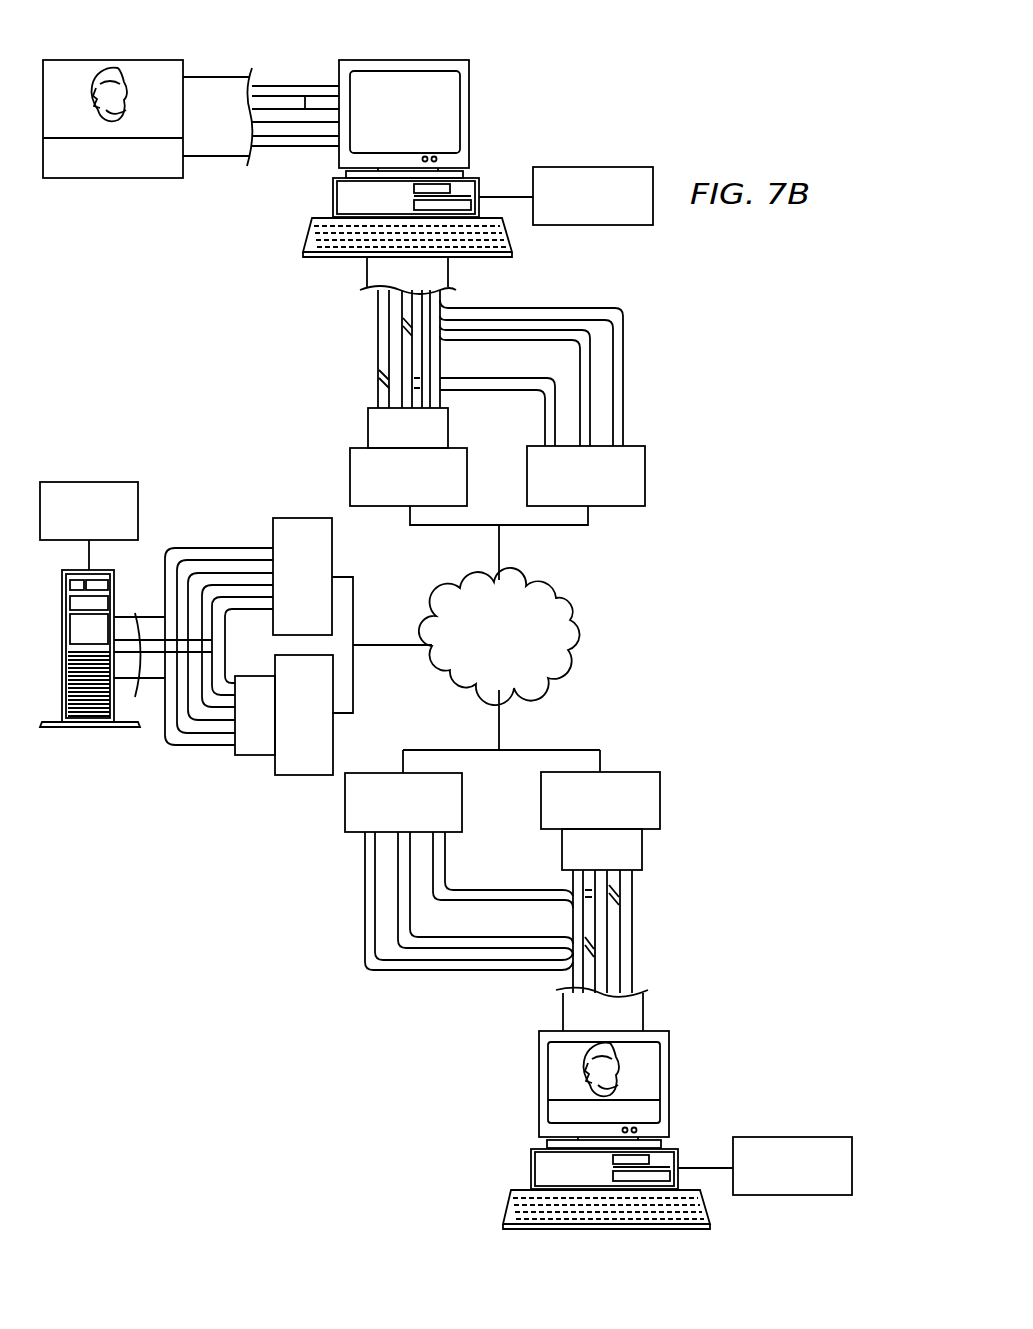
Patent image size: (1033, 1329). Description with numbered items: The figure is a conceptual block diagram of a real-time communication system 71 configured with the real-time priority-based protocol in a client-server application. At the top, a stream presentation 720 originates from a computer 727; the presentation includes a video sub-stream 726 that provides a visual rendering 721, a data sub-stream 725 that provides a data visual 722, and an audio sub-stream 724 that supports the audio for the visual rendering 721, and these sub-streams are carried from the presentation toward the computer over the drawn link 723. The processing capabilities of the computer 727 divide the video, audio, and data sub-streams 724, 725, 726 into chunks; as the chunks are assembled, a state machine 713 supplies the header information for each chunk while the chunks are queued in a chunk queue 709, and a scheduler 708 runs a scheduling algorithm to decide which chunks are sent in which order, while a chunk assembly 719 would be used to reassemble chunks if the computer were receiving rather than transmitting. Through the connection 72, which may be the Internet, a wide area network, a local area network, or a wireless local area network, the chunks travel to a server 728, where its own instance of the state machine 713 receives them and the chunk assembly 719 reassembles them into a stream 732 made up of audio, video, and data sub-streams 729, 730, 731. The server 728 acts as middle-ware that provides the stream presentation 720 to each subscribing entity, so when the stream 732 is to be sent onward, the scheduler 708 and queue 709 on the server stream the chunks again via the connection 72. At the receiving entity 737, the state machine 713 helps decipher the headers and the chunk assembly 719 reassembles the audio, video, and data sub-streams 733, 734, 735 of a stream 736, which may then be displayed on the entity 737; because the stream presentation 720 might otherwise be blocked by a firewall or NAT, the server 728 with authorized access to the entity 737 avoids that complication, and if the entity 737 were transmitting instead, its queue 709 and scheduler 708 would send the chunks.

The real-time communication system 71 is at (565, 72).
The connection 72 is at (572, 660).
The scheduler 708 is at (398, 507).
The chunk queue 709 is at (368, 430).
The state machine 713 is at (592, 166).
The chunk assembly 719 is at (646, 470).
The stream presentation 720 is at (113, 115).
The visual rendering 721 is at (143, 58).
The data visual 722 is at (113, 178).
The media stream connection 723 is at (213, 157).
The audio sub-stream 724 is at (275, 147).
The data sub-stream 725 is at (310, 96).
The video sub-stream 726 is at (275, 86).
The computer 727 is at (426, 58).
The server 728 is at (88, 728).
The sub-stream 729 is at (262, 608).
The sub-stream 730 is at (252, 573).
The sub-stream 731 is at (203, 548).
The stream 732 is at (138, 608).
The sub-stream 733 is at (448, 855).
The sub-stream 734 is at (412, 915).
The sub-stream 735 is at (365, 893).
The stream 736 is at (644, 1005).
The entity 737 is at (531, 1168).